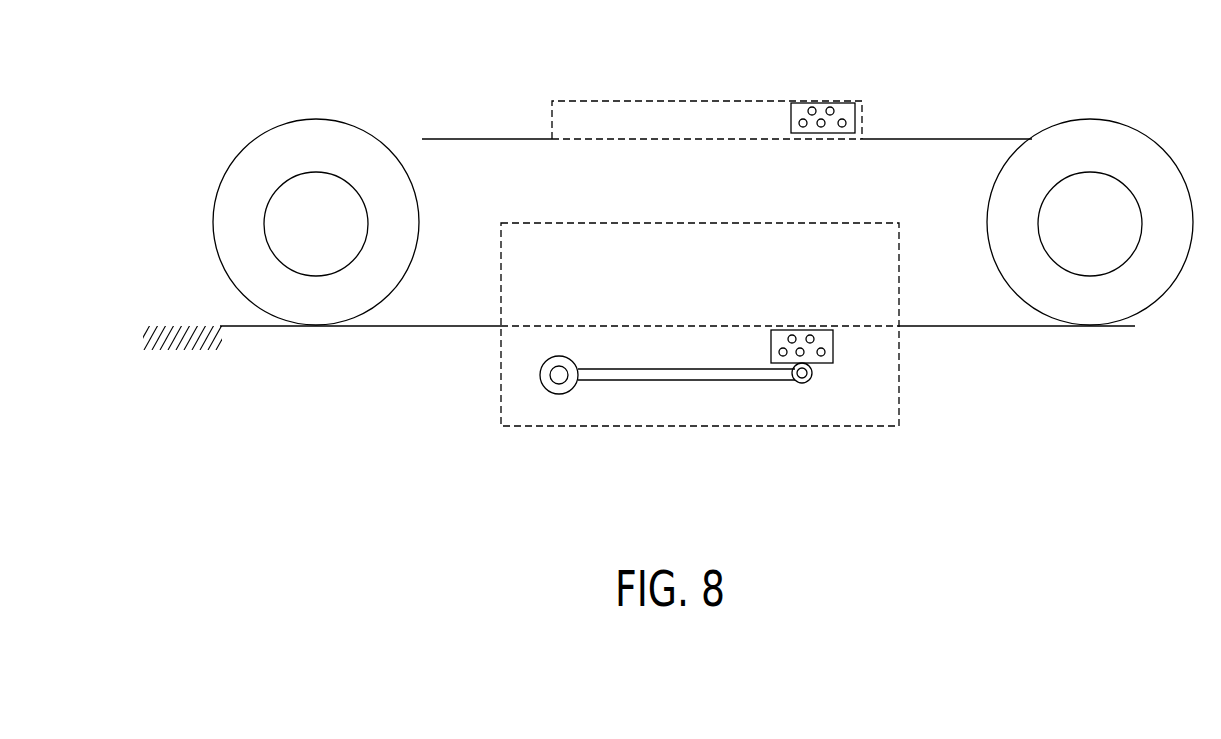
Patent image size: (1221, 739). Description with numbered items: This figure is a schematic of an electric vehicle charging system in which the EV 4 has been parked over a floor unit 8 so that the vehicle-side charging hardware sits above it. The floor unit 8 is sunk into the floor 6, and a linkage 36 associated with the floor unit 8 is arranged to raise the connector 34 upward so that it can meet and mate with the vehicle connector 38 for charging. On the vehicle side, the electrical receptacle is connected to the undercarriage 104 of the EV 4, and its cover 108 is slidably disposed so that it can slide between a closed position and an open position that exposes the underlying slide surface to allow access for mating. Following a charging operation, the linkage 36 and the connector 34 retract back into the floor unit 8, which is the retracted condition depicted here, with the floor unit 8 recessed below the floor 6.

The EV 4 is at (1150, 138).
The floor 6 is at (228, 326).
The floor unit 8 is at (500, 424).
The connector 34 is at (834, 340).
The linkage 36 is at (697, 376).
The vehicle connector 38 is at (843, 103).
The undercarriage 104 is at (972, 139).
The cover 108 is at (585, 115).